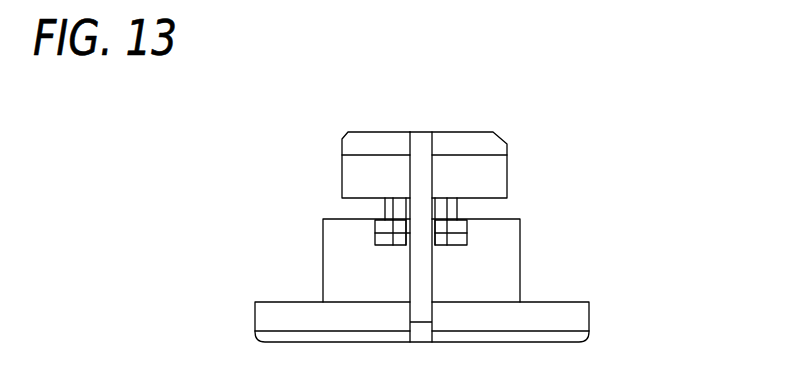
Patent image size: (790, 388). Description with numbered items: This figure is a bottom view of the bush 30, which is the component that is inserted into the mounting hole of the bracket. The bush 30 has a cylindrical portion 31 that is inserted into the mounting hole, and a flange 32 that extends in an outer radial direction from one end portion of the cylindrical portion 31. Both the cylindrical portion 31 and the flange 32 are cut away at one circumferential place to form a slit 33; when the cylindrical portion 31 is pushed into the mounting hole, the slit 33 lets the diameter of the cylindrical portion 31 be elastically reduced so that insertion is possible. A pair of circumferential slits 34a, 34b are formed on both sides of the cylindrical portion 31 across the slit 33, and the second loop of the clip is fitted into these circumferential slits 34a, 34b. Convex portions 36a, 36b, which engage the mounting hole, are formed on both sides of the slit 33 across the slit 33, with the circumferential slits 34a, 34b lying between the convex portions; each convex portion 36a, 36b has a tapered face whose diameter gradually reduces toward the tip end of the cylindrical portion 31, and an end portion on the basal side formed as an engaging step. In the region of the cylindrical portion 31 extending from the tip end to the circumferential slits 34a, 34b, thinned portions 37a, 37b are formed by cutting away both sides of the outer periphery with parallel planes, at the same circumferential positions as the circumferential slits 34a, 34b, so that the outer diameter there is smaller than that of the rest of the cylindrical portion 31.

The bush 30 is at (637, 132).
The cylindrical portion 31 is at (322, 276).
The flange 32 is at (255, 323).
The slit 33 is at (420, 148).
The circumferential slit 34a is at (494, 208).
The circumferential slit 34b is at (350, 212).
The convex portion 36a is at (440, 234).
The convex portion 36b is at (375, 233).
The thinned portion 37a is at (508, 175).
The thinned portion 37b is at (343, 178).